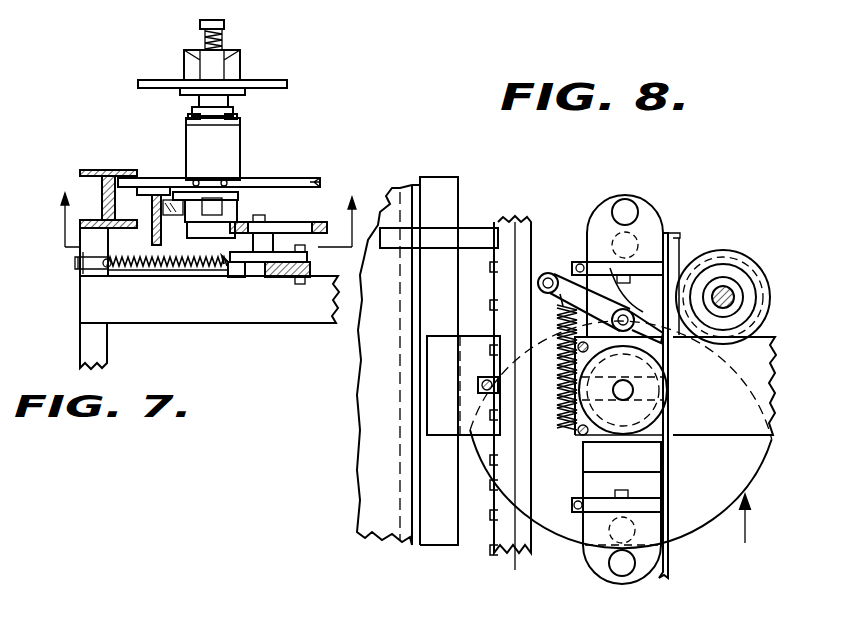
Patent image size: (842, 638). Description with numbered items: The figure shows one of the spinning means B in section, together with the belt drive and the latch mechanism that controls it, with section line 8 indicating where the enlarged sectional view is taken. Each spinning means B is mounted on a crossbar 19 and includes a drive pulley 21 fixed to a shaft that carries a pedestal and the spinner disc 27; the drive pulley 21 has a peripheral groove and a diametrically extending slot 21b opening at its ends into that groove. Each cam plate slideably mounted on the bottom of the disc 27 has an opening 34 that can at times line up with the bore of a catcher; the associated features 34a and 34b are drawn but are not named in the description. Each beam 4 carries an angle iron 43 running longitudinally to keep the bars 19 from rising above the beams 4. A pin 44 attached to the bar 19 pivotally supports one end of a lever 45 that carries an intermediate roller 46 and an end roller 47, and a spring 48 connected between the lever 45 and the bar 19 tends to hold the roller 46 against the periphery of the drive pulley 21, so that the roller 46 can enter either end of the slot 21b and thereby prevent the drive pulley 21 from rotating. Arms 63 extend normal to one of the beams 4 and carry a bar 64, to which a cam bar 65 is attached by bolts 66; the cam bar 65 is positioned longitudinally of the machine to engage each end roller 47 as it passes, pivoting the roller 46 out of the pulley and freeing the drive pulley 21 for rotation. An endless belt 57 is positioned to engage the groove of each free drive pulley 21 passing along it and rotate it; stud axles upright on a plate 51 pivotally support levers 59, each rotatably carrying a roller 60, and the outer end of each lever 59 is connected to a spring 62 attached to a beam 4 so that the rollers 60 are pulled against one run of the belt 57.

In FIG. 7, the spinning means B is at (244, 128).
In FIG. 7, the beam 4 is at (100, 183).
In FIG. 8, the beam 4 is at (372, 488).
In FIG. 7, the section line 8 is at (208, 231).
In FIG. 7, the crossbar 19 is at (265, 181).
In FIG. 8, the crossbar 19 is at (760, 377).
In FIG. 8, the drive pulley 21 is at (662, 416).
In FIG. 7, the diametrically extending slot 21b is at (213, 205).
In FIG. 8, the diametrically extending slot 21b is at (652, 392).
In FIG. 8, the spinner disc 27 is at (758, 462).
In FIG. 8, the opening 34 is at (645, 214).
In FIG. 8, the bracket crossbar 34a is at (740, 220).
In FIG. 8, the bracket plate 34b is at (597, 457).
In FIG. 7, the angle iron 43 is at (128, 170).
In FIG. 8, the angle iron 43 is at (447, 188).
In FIG. 8, the pin 44 is at (703, 251).
In FIG. 8, the lever 45 is at (577, 305).
In FIG. 8, the intermediate roller 46 is at (610, 268).
In FIG. 8, the end roller 47 is at (547, 272).
In FIG. 8, the spring 48 is at (663, 230).
In FIG. 7, the plate 51 is at (290, 277).
In FIG. 7, the endless belt 57 is at (243, 262).
In FIG. 8, the endless belt 57 is at (676, 568).
In FIG. 7, the lever 59 is at (217, 268).
In FIG. 7, the roller 60 is at (286, 232).
In FIG. 8, the roller 60 is at (738, 291).
In FIG. 7, the spring 62 is at (155, 265).
In FIG. 8, the arm 63 is at (432, 232).
In FIG. 7, the bar 64 is at (153, 212).
In FIG. 8, the bar 64 is at (503, 527).
In FIG. 8, the cam bar 65 is at (522, 553).
In FIG. 8, the bolt 66 is at (495, 287).